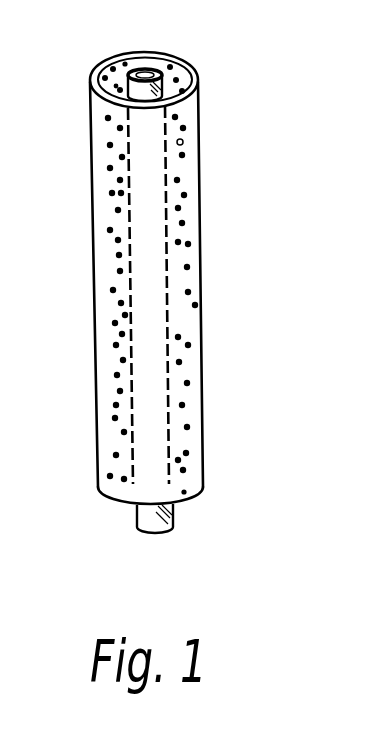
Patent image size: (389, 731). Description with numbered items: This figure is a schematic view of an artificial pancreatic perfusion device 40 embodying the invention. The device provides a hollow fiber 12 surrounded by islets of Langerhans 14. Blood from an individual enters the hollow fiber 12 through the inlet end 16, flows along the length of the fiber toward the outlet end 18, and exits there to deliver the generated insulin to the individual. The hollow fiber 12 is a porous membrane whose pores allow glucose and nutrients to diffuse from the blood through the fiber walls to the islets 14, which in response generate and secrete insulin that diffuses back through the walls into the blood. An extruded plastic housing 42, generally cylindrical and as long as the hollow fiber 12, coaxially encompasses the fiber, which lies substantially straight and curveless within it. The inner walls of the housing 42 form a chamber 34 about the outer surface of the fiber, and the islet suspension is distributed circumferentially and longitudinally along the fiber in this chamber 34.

The hollow fiber 12 is at (158, 84).
The islets of Langerhans 14 is at (113, 290).
The inlet end 16 is at (150, 64).
The outlet end 18 is at (156, 538).
The chamber 34 is at (101, 81).
The artificial pancreatic perfusion device 40 is at (237, 178).
The extruded plastic housing 42 is at (204, 389).